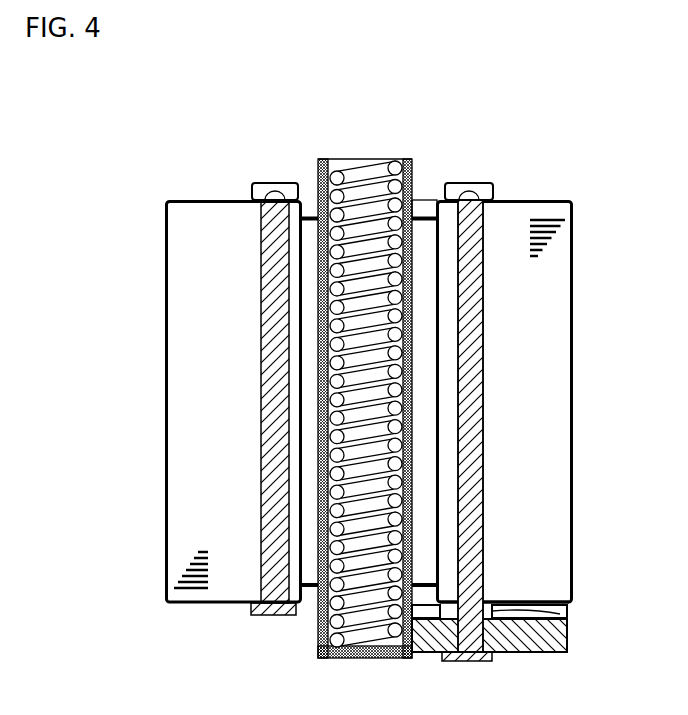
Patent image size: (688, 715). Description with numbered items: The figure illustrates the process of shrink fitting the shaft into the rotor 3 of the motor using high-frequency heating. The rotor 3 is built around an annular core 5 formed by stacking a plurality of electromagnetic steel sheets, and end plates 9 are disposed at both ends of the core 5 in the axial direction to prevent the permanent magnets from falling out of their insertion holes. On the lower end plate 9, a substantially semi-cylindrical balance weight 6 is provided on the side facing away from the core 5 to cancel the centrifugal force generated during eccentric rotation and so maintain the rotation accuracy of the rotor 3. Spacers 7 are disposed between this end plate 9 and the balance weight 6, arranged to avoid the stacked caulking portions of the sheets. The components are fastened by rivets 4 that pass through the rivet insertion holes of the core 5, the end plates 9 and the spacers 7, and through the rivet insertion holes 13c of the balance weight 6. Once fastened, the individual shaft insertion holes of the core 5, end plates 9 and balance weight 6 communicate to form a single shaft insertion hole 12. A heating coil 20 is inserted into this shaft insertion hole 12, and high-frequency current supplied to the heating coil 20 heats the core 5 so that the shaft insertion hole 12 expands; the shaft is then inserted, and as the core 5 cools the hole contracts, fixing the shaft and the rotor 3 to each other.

The rotor 3 is at (196, 145).
The rivet 4 is at (470, 330).
The core 5 is at (572, 487).
The balance weight 6 is at (560, 640).
The spacer 7 is at (557, 625).
The end plate 9 is at (572, 201).
The shaft insertion hole 12 is at (428, 213).
The rivet insertion hole 13c is at (470, 662).
The heating coil 20 is at (357, 159).